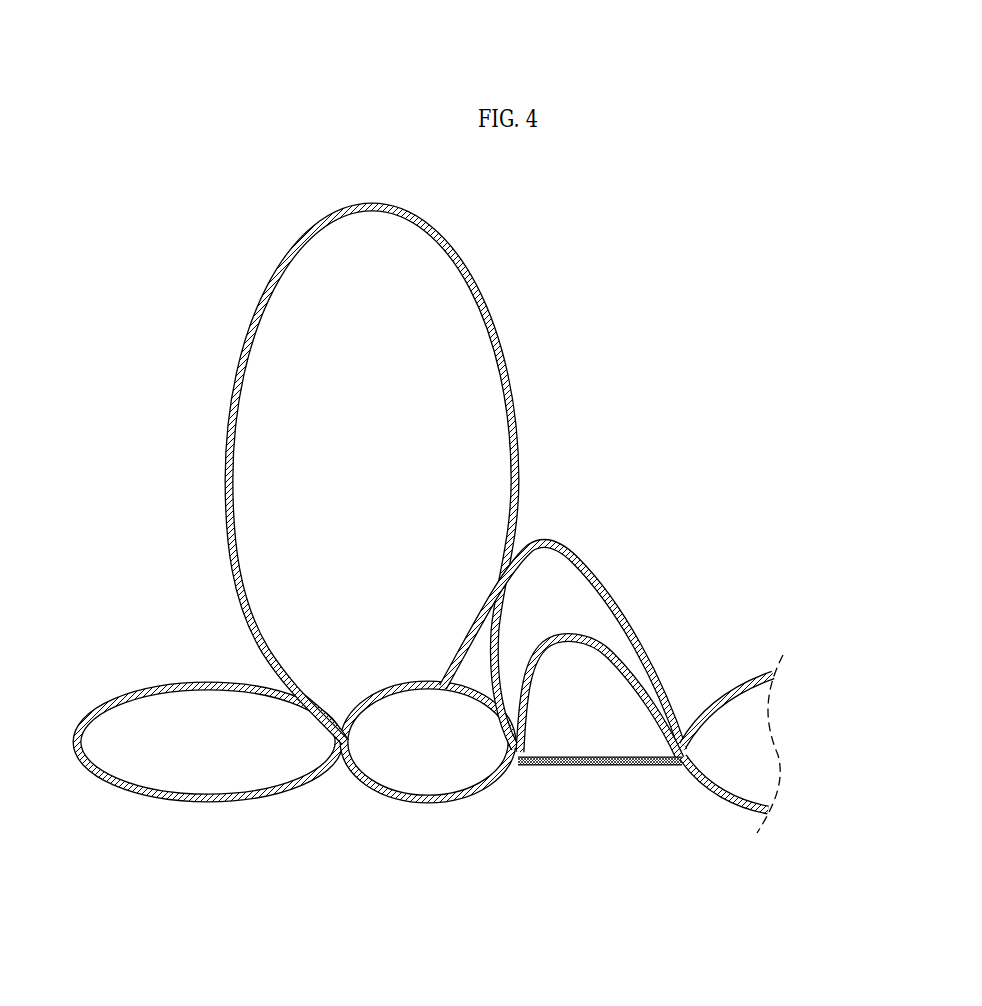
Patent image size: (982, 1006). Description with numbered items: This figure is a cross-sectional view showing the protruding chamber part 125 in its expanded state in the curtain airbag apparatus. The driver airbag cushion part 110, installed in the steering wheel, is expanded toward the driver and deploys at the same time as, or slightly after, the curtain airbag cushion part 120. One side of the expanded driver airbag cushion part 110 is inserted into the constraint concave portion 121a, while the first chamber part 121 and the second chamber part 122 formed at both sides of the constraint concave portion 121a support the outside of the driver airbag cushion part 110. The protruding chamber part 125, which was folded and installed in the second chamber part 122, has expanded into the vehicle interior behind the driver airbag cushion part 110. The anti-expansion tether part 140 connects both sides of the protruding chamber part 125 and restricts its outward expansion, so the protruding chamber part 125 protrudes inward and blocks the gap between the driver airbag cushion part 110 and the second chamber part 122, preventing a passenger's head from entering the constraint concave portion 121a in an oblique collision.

The driver airbag cushion part 110 is at (507, 388).
The curtain airbag cushion part 120 is at (702, 620).
The first chamber part 121 is at (246, 798).
The constraint concave portion 121a is at (344, 712).
The second chamber part 122 is at (453, 798).
The protruding chamber part 125 is at (575, 557).
The anti-expansion tether part 140 is at (582, 765).